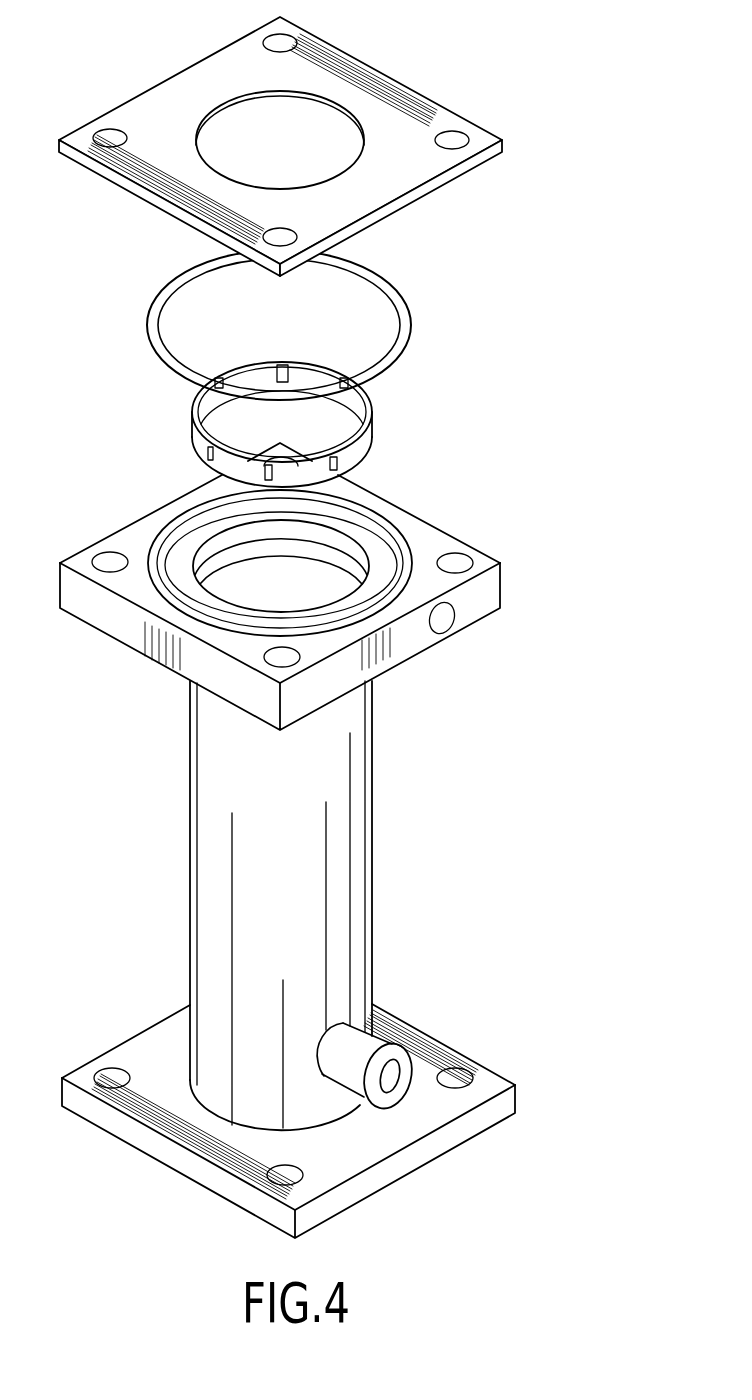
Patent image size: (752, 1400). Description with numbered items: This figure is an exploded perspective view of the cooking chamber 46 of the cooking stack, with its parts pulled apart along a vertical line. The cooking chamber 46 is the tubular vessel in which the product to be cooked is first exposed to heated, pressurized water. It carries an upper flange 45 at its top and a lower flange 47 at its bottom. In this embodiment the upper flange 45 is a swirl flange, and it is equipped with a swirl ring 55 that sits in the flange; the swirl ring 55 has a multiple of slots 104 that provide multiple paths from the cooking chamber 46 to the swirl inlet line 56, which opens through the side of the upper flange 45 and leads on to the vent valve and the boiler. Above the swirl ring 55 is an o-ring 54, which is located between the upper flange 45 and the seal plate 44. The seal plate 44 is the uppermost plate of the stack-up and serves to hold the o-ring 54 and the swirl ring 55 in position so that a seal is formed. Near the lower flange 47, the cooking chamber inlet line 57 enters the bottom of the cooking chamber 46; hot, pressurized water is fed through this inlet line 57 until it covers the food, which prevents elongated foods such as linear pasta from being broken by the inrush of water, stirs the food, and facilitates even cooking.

The seal plate 44 is at (404, 85).
The o-ring 54 is at (408, 292).
The swirl ring 55 is at (378, 412).
The slots 104 is at (253, 484).
The upper flange 45 is at (503, 573).
The swirl inlet line 56 is at (445, 622).
The cooking chamber 46 is at (345, 855).
The lower flange 47 is at (517, 1086).
The cooking chamber inlet line 57 is at (397, 1092).